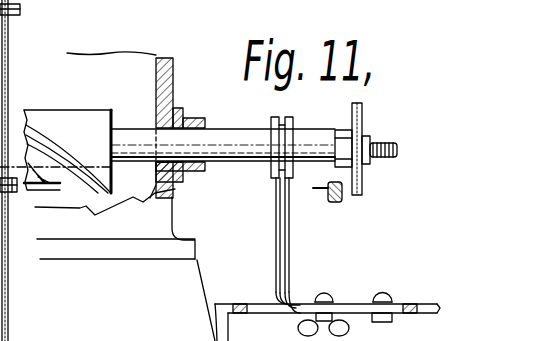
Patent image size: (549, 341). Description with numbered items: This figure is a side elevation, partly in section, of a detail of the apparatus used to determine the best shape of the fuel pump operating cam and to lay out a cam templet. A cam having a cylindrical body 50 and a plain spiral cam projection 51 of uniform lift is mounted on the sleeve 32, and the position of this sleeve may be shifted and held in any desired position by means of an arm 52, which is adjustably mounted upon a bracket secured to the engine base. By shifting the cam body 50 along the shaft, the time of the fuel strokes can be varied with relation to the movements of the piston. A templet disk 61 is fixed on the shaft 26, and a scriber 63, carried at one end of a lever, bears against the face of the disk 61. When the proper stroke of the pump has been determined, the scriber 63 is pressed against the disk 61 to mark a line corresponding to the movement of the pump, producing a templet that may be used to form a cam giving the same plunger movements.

The cylindrical body 50 is at (73, 115).
The spiral cam projection 51 is at (82, 183).
The sleeve 32 is at (217, 137).
The shaft 26 is at (308, 140).
The templet disk 61 is at (370, 112).
The scriber 63 is at (317, 194).
The arm 52 is at (282, 246).